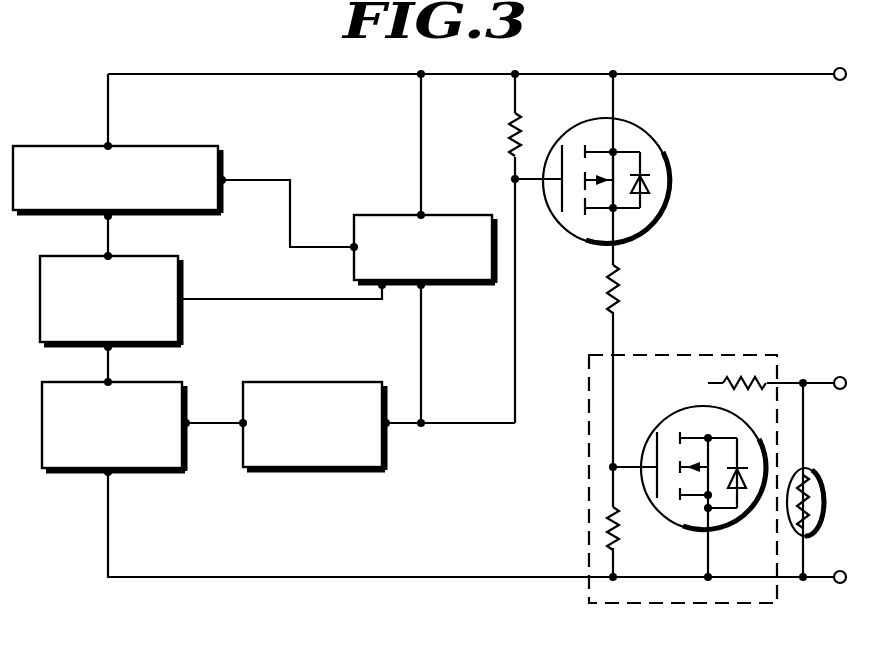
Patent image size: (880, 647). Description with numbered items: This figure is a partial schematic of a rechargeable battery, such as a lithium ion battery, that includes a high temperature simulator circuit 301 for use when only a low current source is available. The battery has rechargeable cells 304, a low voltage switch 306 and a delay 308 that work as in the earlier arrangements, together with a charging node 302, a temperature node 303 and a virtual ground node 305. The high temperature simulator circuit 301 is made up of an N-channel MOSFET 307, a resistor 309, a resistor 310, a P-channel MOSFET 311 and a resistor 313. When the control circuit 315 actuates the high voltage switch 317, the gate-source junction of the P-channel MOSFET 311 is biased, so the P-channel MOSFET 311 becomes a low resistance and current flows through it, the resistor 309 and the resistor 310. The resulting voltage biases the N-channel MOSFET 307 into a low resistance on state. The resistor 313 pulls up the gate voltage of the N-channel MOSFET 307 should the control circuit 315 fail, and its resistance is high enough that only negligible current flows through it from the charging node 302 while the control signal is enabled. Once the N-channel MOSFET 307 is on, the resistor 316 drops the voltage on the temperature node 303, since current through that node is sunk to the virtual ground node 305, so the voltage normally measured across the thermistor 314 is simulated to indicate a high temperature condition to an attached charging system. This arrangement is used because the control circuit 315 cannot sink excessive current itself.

The high temperature simulator circuit 301 is at (587, 390).
The charging node 302 is at (835, 90).
The temperature node 303 is at (835, 375).
The rechargeable cells 304 is at (167, 143).
The virtual ground node 305 is at (835, 590).
The low voltage switch 306 is at (190, 282).
The N-channel MOSFET 307 is at (680, 533).
The delay 308 is at (340, 380).
The resistor 309 is at (625, 290).
The resistor 310 is at (598, 520).
The P-channel MOSFET 311 is at (668, 168).
The resistor 313 is at (503, 142).
The thermistor 314 is at (817, 480).
The control circuit 315 is at (390, 213).
The resistor 316 is at (743, 370).
The high voltage switch 317 is at (190, 398).